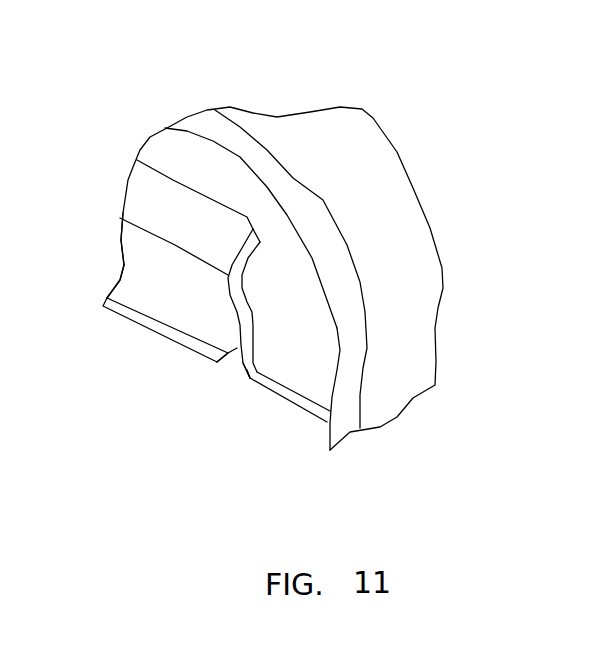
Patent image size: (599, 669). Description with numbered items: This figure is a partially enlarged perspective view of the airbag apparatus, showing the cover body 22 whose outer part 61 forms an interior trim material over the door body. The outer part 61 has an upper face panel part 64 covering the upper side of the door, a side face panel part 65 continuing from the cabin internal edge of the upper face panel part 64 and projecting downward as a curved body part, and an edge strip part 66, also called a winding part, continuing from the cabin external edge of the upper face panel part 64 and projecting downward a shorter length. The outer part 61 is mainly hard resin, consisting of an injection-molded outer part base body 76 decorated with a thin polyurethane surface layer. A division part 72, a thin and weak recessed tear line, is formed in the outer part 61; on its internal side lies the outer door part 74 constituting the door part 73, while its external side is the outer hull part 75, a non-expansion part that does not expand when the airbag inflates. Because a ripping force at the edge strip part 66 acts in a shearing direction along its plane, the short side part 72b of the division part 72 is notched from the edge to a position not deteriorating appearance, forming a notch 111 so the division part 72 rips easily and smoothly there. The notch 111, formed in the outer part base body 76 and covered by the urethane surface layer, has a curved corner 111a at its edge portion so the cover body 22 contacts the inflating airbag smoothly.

The cover body 22 is at (111, 68).
The outer part 61 is at (125, 287).
The upper face panel part 64 is at (137, 203).
The side face panel part 65 is at (343, 115).
The edge strip part 66 is at (143, 298).
The division part 72 is at (240, 303).
The short side part 72b is at (240, 280).
The door part 73 is at (147, 187).
The outer door part 74 is at (150, 185).
The outer hull part 75 is at (330, 372).
The outer part base body 76 is at (130, 257).
The notch 111 is at (238, 365).
The corner 111a is at (217, 363).